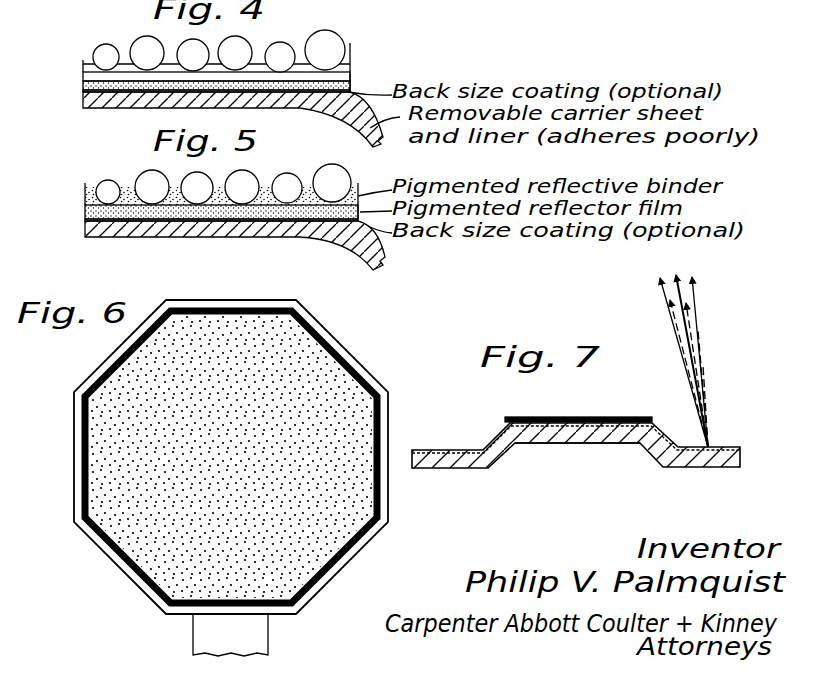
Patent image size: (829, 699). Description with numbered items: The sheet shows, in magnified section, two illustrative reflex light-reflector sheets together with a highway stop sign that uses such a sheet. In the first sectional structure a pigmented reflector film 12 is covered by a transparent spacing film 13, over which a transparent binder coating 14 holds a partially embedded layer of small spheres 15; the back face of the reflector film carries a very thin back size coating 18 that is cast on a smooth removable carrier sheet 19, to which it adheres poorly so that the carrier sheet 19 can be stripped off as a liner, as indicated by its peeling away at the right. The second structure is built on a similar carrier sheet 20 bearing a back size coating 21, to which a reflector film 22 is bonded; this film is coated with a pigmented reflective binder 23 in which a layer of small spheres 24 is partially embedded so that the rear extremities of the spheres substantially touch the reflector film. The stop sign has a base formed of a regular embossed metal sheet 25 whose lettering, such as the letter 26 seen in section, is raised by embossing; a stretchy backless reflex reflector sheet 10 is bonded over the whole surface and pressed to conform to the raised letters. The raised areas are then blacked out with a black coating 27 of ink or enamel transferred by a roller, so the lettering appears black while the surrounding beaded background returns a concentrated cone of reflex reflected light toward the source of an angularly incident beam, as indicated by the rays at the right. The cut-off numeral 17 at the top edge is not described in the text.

In FIG. 6, the reflex reflector sheet 10 is at (140, 552).
In FIG. 7, the reflex reflector sheet 10 is at (460, 450).
In FIG. 4, the reflector film 12 is at (83, 87).
In FIG. 4, the spacing film 13 is at (82, 78).
In FIG. 4, the binder coating 14 is at (82, 62).
In FIG. 4, the small spheres 15 is at (100, 47).
In FIG. 4, the reflective sheeting 17 is at (53, 5).
In FIG. 4, the back size coating 18 is at (82, 92).
In FIG. 4, the carrier sheet 19 is at (110, 104).
In FIG. 5, the carrier sheet 20 is at (105, 236).
In FIG. 5, the back size coating 21 is at (85, 219).
In FIG. 5, the reflector film 22 is at (85, 211).
In FIG. 5, the reflective binder 23 is at (85, 193).
In FIG. 5, the small spheres 24 is at (107, 184).
In FIG. 6, the embossed metal sheet 25 is at (83, 388).
In FIG. 7, the embossed metal sheet 25 is at (412, 461).
In FIG. 6, the letter 26 is at (100, 445).
In FIG. 7, the letter 26 is at (560, 440).
In FIG. 7, the black coating 27 is at (594, 418).